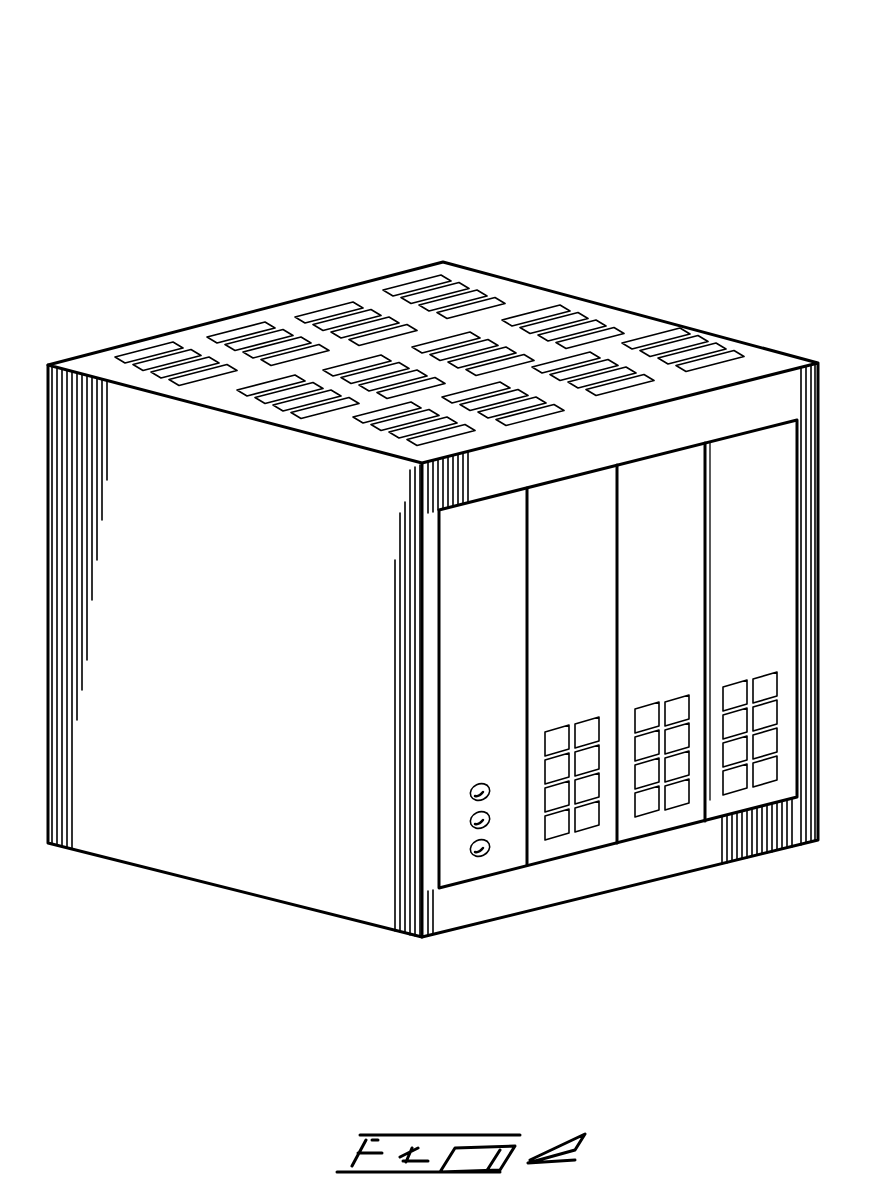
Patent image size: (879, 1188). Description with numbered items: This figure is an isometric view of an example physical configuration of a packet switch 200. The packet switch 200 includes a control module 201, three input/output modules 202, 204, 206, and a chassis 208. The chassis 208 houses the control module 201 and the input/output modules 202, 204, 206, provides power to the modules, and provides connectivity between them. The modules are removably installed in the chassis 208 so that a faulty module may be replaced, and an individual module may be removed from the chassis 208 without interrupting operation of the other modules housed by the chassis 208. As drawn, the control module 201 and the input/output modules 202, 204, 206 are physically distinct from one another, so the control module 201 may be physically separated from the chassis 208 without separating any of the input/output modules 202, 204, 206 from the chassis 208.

The packet switch 200 is at (163, 142).
The control module 201 is at (483, 868).
The input/output module 202 is at (573, 843).
The input/output module 204 is at (665, 820).
The input/output module 206 is at (753, 797).
The chassis 208 is at (47, 393).